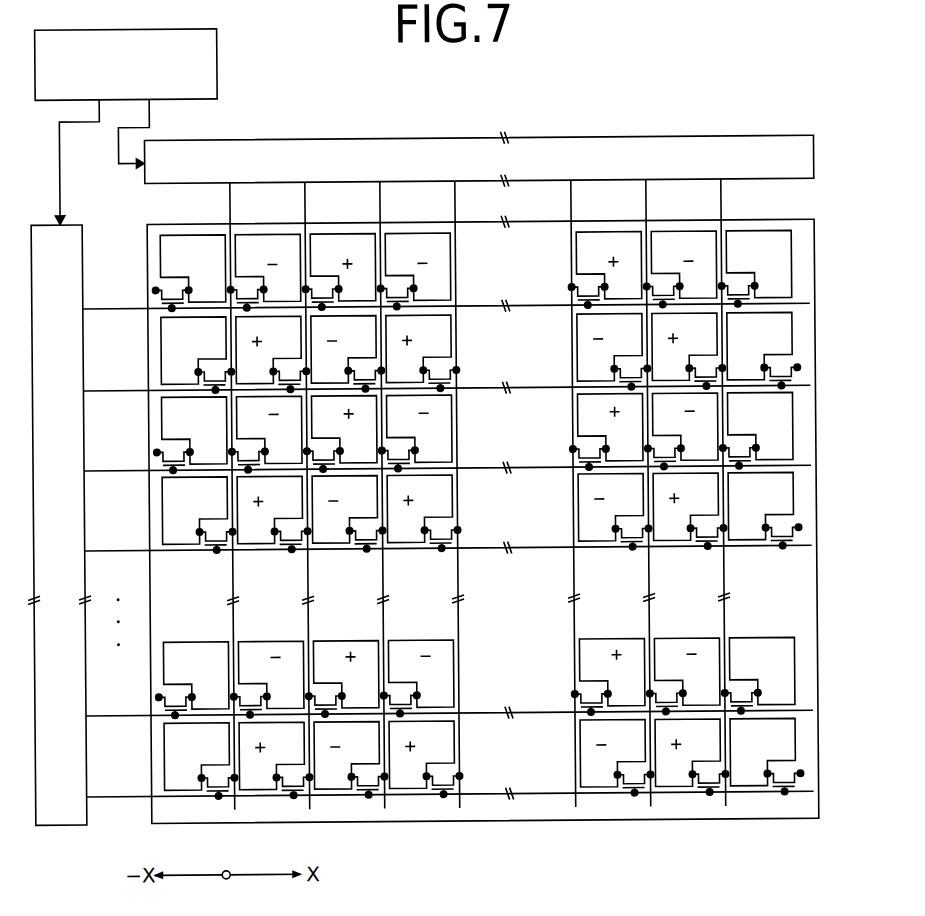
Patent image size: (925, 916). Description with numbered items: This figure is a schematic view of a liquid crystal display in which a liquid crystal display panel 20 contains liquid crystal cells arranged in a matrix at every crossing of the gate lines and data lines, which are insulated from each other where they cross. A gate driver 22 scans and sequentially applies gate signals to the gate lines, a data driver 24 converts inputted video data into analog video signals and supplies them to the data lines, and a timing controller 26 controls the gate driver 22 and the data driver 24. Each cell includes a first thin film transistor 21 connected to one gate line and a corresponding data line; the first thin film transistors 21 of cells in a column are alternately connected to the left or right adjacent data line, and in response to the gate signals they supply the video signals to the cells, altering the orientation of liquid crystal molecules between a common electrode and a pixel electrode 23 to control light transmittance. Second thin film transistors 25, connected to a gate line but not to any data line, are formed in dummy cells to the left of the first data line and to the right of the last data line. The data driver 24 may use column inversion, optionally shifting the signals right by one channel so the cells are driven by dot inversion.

The liquid crystal display panel 20 is at (817, 340).
The first thin film transistor 21 is at (404, 297).
The gate driver 22 is at (73, 817).
The pixel electrode 23 is at (168, 276).
The data driver 24 is at (557, 138).
The second thin film transistor 25 is at (152, 300).
The timing controller 26 is at (219, 43).